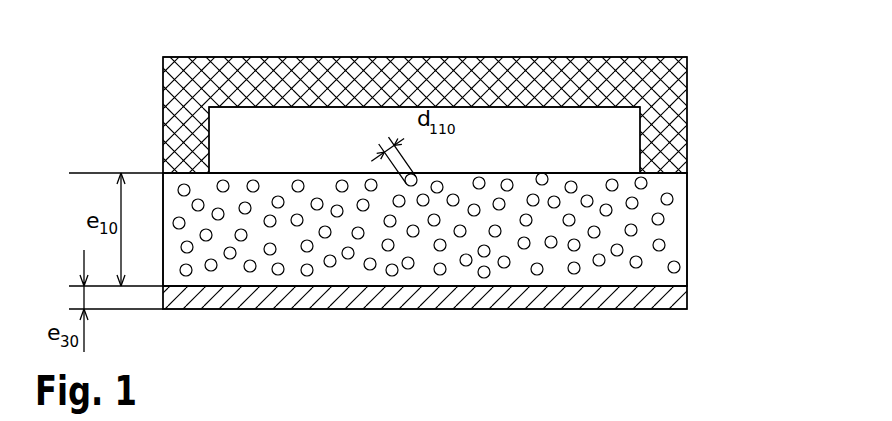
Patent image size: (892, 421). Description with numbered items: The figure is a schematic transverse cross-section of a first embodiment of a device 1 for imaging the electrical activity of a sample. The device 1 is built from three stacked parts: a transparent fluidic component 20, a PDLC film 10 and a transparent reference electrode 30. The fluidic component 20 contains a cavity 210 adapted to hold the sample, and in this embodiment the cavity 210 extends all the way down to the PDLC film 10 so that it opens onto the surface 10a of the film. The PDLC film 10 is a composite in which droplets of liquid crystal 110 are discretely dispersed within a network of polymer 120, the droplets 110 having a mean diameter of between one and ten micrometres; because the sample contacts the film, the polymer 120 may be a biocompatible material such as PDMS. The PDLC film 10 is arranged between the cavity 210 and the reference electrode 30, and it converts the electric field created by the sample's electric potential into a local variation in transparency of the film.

The device 1 is at (366, 164).
The transparent fluidic component 20 is at (680, 100).
The cavity 210 is at (549, 115).
The surface of the PDLC film 10a is at (584, 159).
The PDLC film 10 is at (482, 229).
The droplets of liquid crystal 110 is at (674, 201).
The polymer 120 is at (662, 230).
The transparent reference electrode 30 is at (686, 304).